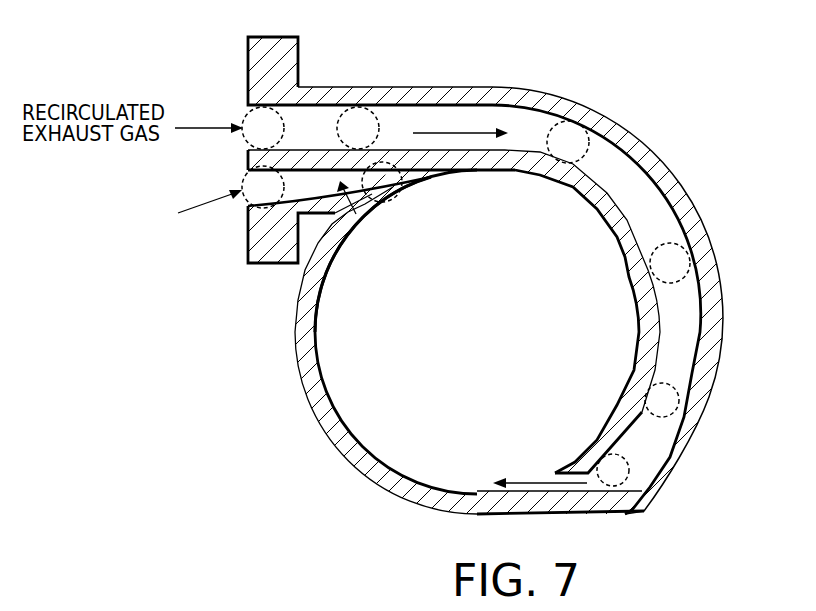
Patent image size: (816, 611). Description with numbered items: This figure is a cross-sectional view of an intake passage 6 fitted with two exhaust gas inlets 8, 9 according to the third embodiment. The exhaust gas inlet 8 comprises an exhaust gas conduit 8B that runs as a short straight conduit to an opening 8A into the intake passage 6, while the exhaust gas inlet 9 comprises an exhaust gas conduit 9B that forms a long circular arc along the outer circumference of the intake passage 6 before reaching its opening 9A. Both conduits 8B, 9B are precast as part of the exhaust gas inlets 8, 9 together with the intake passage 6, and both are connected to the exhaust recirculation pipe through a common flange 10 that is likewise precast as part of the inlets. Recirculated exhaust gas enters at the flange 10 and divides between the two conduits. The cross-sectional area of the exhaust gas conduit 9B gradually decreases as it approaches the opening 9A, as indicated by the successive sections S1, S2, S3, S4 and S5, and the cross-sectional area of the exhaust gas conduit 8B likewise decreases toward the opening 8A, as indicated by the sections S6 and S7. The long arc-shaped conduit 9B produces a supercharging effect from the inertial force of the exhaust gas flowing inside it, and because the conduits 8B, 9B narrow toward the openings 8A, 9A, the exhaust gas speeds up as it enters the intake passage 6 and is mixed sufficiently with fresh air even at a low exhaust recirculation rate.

The common flange 10 is at (257, 63).
The exhaust gas inlet 9 is at (730, 318).
The opening 9A is at (590, 487).
The exhaust gas conduit 9B is at (636, 193).
The exhaust gas inlet 8 is at (352, 208).
The opening 8A is at (417, 170).
The exhaust gas conduit 8B is at (337, 238).
The intake passage 6 is at (327, 393).
The cross-sectional area S1 is at (336, 107).
The cross-sectional area S2 is at (585, 127).
The cross-sectional area S3 is at (687, 249).
The cross-sectional area S4 is at (678, 385).
The cross-sectional area S5 is at (648, 459).
The cross-sectional area S6 is at (246, 205).
The cross-sectional area S7 is at (388, 202).